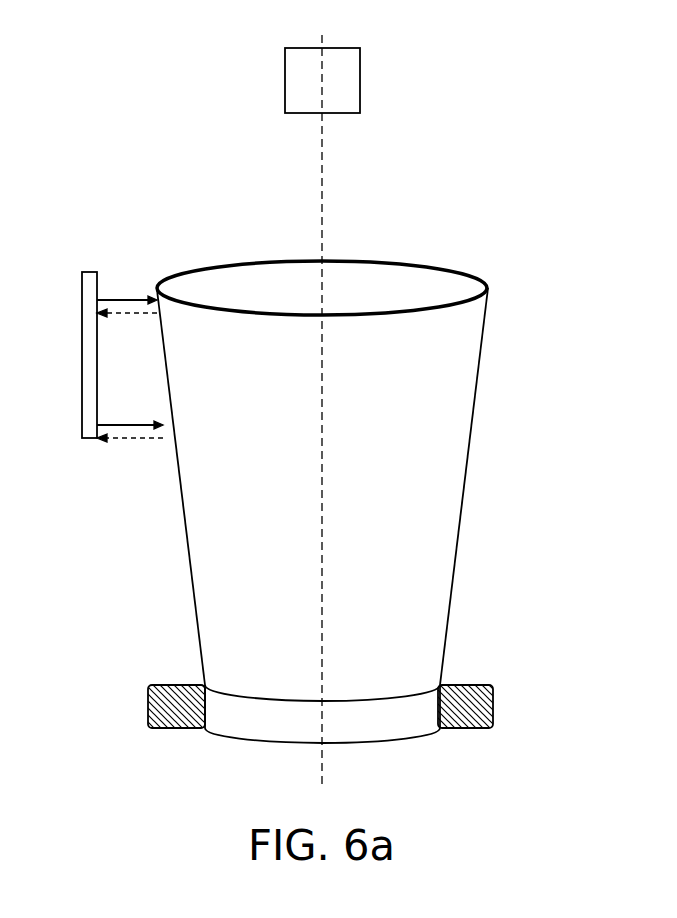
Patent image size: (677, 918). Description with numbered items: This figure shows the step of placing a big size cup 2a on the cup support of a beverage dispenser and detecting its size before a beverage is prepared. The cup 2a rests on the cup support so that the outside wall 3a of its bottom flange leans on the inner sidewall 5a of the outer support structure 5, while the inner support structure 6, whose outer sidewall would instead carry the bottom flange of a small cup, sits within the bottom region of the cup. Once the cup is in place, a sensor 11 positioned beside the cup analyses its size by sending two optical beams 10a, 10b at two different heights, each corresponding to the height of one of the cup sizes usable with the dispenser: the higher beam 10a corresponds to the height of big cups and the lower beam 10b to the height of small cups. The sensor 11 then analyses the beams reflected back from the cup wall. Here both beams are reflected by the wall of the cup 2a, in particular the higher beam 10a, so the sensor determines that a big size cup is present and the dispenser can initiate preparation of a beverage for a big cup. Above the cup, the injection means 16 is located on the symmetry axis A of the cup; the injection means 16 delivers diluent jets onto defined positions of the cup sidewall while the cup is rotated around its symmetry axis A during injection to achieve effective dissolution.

The big size cup 2a is at (453, 383).
The outside wall of bottom flange 3a is at (205, 683).
The outer support structure 5 is at (148, 708).
The inner sidewall of outer support structure 5a is at (207, 705).
The inner support structure 6 is at (260, 727).
The optical beam 10a is at (113, 300).
The optical beam 10b is at (113, 425).
The sensor 11 is at (82, 353).
The injection means 16 is at (360, 80).
The symmetry axis A is at (322, 421).